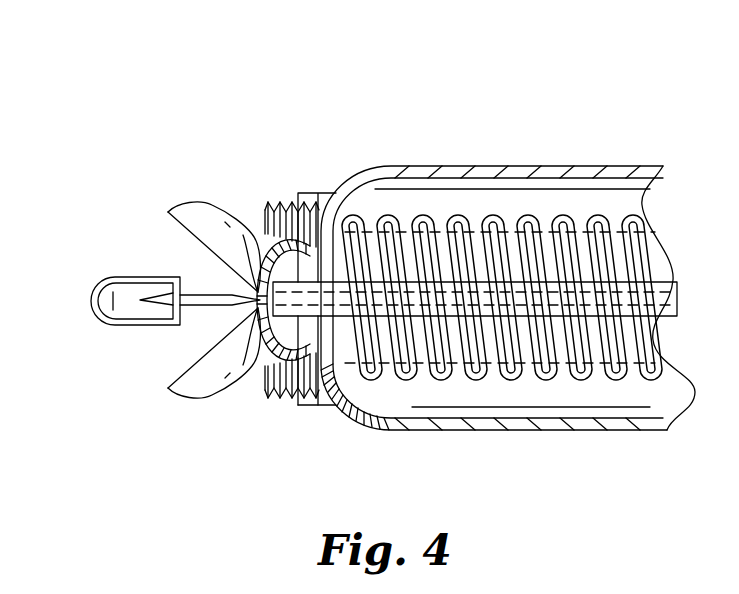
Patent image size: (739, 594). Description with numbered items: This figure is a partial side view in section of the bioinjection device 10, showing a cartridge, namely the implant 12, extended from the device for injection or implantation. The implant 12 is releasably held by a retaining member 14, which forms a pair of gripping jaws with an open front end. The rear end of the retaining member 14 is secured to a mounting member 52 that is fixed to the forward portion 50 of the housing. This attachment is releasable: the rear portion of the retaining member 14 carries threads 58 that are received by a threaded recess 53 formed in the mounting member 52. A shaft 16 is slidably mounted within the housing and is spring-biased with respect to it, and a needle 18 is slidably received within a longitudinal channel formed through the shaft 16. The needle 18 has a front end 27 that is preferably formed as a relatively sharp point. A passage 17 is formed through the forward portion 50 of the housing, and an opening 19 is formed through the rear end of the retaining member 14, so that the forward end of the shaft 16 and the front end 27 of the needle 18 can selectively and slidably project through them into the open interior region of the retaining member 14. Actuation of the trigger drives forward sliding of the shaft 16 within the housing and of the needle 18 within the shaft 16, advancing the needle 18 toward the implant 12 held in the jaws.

The illuminated fishing lure assembly 10 is at (588, 102).
The implant 12 is at (100, 288).
The retaining member 14 is at (183, 207).
The shaft 16 is at (270, 384).
The passage 17 is at (263, 223).
The needle 18 is at (197, 293).
The opening 19 is at (195, 322).
The front end of needle 27 is at (143, 303).
The forward portion of housing 50 is at (367, 180).
The mounting member 52 is at (310, 193).
The threaded recess 53 is at (355, 387).
The threads 58 is at (297, 406).